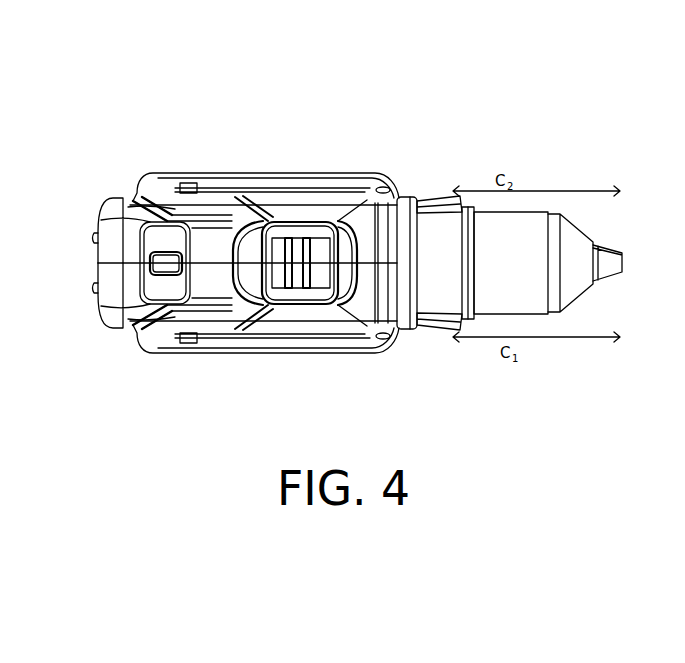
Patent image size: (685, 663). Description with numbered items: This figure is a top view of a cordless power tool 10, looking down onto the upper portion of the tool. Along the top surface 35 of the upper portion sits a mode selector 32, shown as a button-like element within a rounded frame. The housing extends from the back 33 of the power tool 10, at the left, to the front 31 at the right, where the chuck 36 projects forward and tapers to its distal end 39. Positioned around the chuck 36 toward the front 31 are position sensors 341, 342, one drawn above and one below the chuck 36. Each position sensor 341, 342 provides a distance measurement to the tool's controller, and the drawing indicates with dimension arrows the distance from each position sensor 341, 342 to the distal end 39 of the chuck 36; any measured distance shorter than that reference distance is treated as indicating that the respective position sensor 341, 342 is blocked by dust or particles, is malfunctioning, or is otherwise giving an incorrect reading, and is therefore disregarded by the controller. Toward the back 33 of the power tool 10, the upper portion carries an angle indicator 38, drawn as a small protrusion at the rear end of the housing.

The cordless power tool 10 is at (349, 211).
The front 31 is at (569, 207).
The mode selector 32 is at (165, 262).
The back 33 is at (127, 229).
The position sensor 341 is at (445, 324).
The position sensor 342 is at (443, 198).
The top surface 35 is at (216, 262).
The chuck 36 is at (521, 270).
The angle indicator 38 is at (97, 263).
The distal end 39 is at (622, 250).